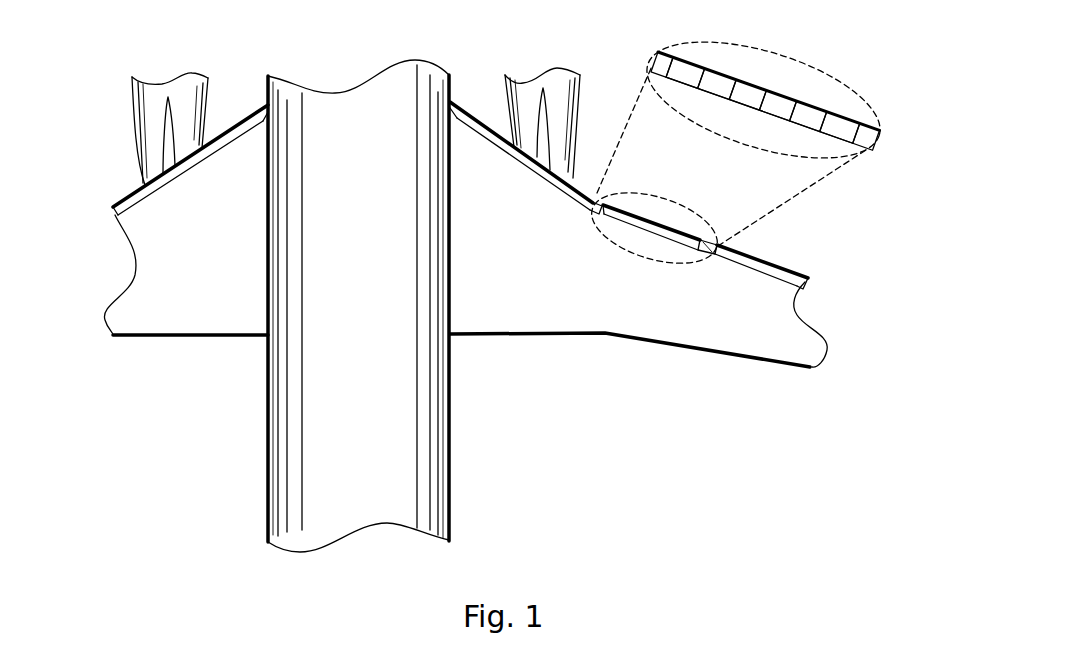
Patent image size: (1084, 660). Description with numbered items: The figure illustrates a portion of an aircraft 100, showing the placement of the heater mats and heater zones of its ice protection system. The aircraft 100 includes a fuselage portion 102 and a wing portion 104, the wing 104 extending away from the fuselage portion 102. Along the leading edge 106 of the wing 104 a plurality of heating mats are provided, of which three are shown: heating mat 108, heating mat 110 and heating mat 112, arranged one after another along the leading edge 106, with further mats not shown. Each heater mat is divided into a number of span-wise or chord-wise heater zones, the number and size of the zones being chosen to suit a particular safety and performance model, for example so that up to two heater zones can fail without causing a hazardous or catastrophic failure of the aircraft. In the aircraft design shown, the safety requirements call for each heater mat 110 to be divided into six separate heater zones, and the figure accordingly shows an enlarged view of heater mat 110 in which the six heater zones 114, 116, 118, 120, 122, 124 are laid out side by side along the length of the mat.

The aircraft 100 is at (498, 285).
The fuselage portion 102 is at (346, 259).
The wing portion 104 is at (523, 282).
The leading edge 106 is at (807, 277).
The heating mat 108 is at (520, 152).
The heating mat 110 is at (675, 237).
The heating mat 112 is at (753, 263).
The heater zone 114 is at (685, 72).
The heater zone 116 is at (717, 84).
The heater zone 118 is at (747, 95).
The heater zone 120 is at (777, 105).
The heater zone 122 is at (808, 116).
The heater zone 124 is at (840, 127).